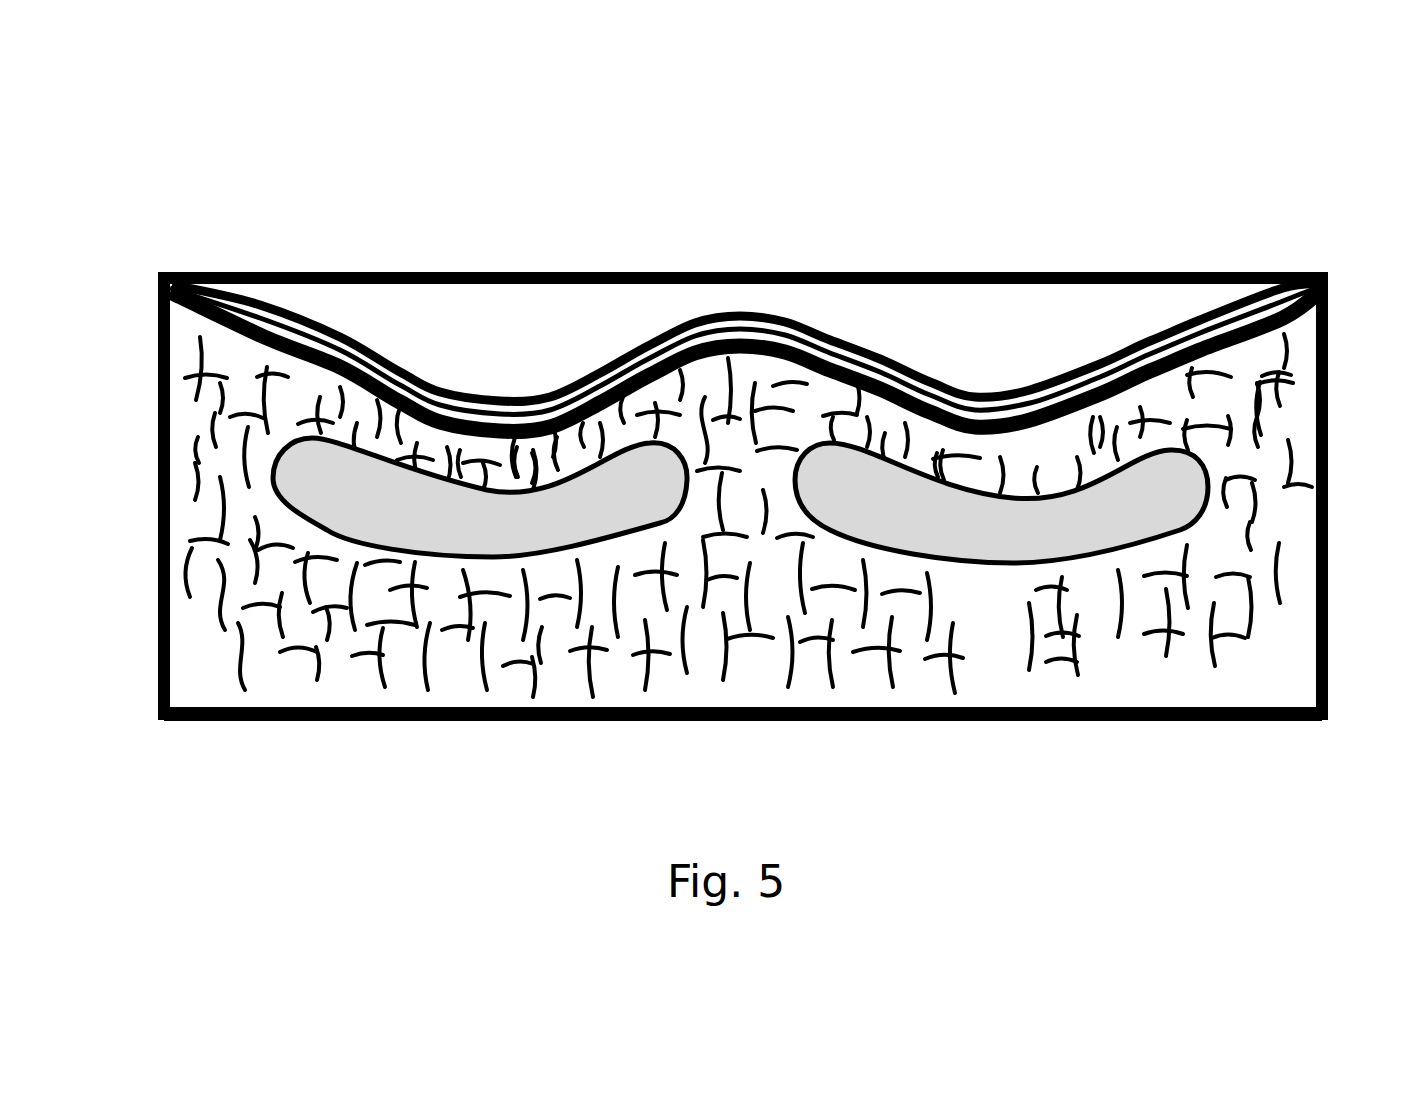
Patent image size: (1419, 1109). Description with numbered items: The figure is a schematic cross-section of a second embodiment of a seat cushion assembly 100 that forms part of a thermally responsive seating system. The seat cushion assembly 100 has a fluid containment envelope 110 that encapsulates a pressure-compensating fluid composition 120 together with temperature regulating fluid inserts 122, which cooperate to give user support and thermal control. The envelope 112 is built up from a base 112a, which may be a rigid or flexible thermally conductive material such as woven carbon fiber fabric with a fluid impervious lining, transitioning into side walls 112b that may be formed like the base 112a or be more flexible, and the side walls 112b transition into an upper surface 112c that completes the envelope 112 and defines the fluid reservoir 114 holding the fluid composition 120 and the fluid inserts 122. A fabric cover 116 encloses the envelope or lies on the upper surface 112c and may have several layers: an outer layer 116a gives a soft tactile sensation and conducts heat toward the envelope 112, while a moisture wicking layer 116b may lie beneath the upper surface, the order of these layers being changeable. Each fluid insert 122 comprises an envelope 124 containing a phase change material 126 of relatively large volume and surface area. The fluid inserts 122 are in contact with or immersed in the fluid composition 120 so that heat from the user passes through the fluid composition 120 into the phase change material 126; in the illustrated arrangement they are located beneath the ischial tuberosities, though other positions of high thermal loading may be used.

The seat cushion assembly 100 is at (1036, 193).
The fluid containment envelope 110 is at (1325, 363).
The envelope 112 is at (1025, 760).
The base 112a is at (1088, 723).
The side walls 112b is at (160, 658).
The upper surface 112c is at (172, 280).
The fluid reservoir 114 is at (288, 683).
The fabric cover 116 is at (307, 310).
The outer layer 116a is at (337, 343).
The moisture wicking layer 116b is at (208, 279).
The fluid composition 120 is at (783, 677).
The fluid insert 122 is at (442, 562).
The envelope 124 is at (292, 455).
The phase change material 126 is at (292, 480).